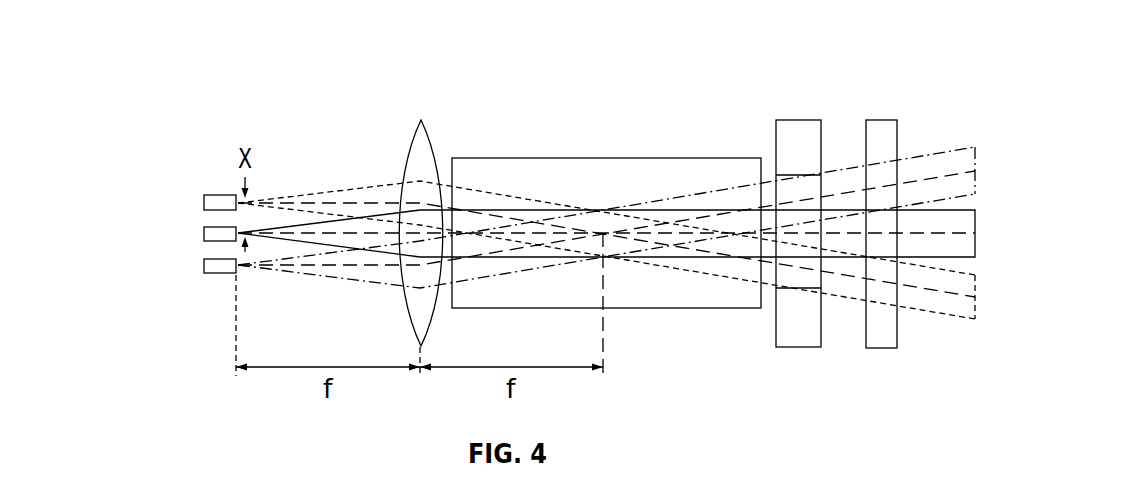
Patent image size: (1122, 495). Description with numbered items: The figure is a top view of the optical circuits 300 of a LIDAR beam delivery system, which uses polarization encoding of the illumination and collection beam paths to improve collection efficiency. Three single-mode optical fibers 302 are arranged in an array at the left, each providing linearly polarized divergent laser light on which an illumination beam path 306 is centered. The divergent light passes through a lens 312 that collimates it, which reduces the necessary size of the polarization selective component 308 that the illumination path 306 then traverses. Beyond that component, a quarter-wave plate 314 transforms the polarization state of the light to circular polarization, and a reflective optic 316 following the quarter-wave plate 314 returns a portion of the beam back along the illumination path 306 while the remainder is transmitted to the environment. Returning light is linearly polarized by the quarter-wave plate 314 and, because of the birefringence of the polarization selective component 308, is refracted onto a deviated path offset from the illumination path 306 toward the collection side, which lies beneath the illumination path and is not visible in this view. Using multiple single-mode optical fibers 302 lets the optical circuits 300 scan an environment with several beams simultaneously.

The optical circuits 300 is at (193, 50).
The single-mode optical fiber 302 is at (167, 183).
The illumination beam path 306 is at (340, 187).
The polarization selective component 308 is at (607, 158).
The lens 312 is at (418, 124).
The quarter-wave plate 314 is at (798, 120).
The reflective optic 316 is at (882, 120).